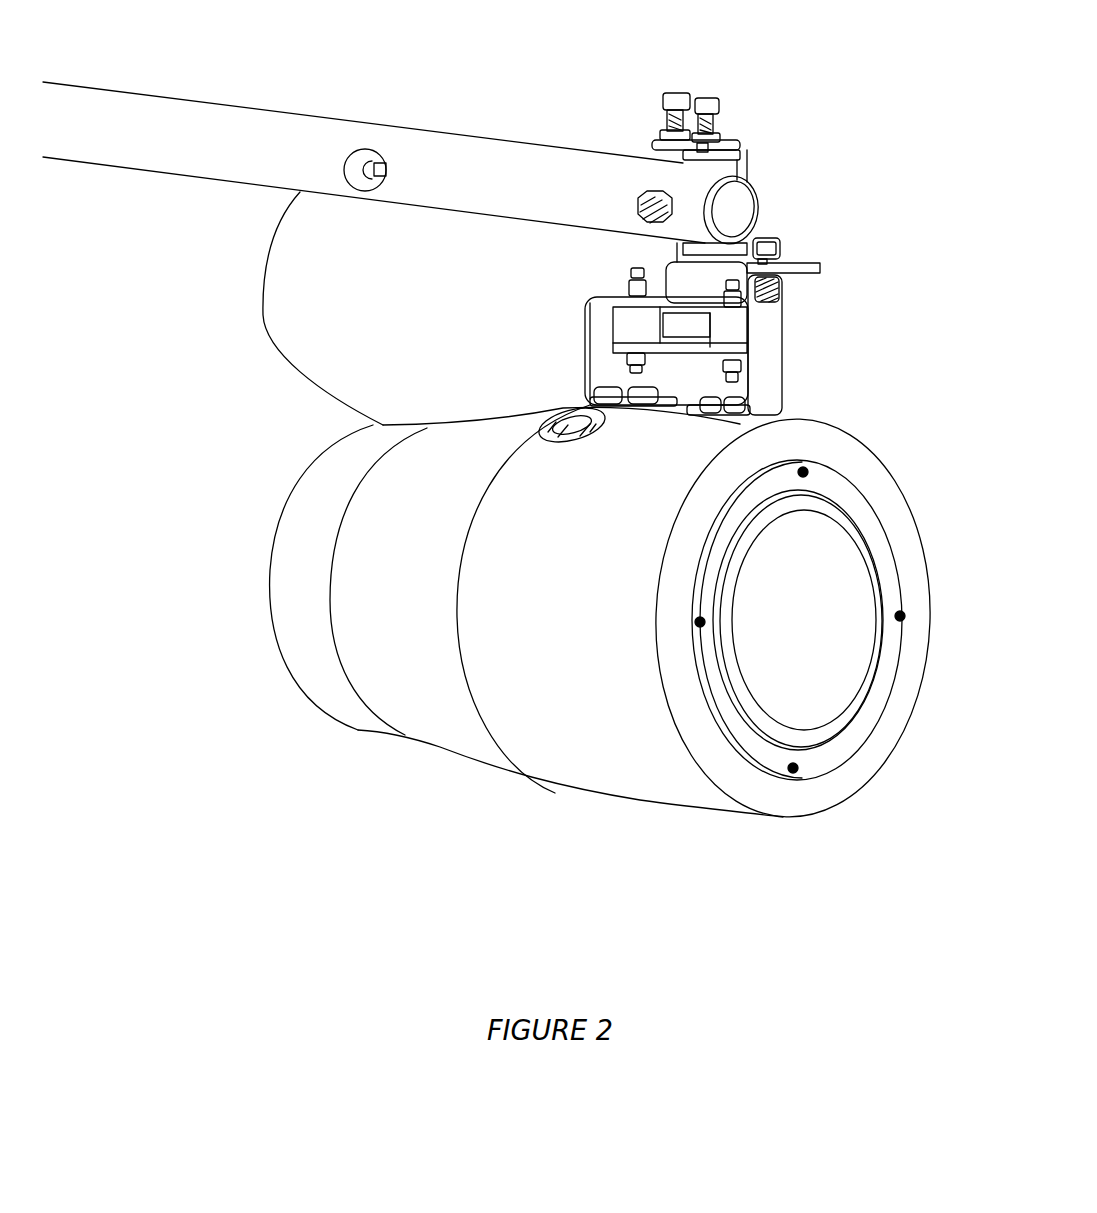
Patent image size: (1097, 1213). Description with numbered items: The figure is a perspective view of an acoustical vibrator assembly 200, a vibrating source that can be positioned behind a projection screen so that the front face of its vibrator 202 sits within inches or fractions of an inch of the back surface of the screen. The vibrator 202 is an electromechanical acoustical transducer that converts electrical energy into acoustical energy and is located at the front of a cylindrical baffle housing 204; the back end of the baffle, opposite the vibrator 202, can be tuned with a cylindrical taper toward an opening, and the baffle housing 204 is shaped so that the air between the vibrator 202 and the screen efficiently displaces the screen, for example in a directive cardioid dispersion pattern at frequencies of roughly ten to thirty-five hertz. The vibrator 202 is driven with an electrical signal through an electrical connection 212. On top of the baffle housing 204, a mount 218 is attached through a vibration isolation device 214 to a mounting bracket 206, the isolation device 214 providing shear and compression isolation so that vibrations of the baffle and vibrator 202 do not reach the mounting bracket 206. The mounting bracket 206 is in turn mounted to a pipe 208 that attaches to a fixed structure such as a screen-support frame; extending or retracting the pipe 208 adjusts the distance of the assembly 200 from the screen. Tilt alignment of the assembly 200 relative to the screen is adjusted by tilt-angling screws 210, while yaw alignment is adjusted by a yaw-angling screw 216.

The acoustical vibrator assembly 200 is at (248, 308).
The vibrator 202 is at (790, 688).
The baffle housing 204 is at (568, 705).
The mounting bracket 206 is at (820, 272).
The pipe 208 is at (523, 195).
The tilt-angling screws 210 is at (680, 93).
The electrical connection 212 is at (556, 445).
The vibration isolation device 214 is at (727, 330).
The yaw-angling screw 216 is at (783, 245).
The mount 218 is at (767, 333).